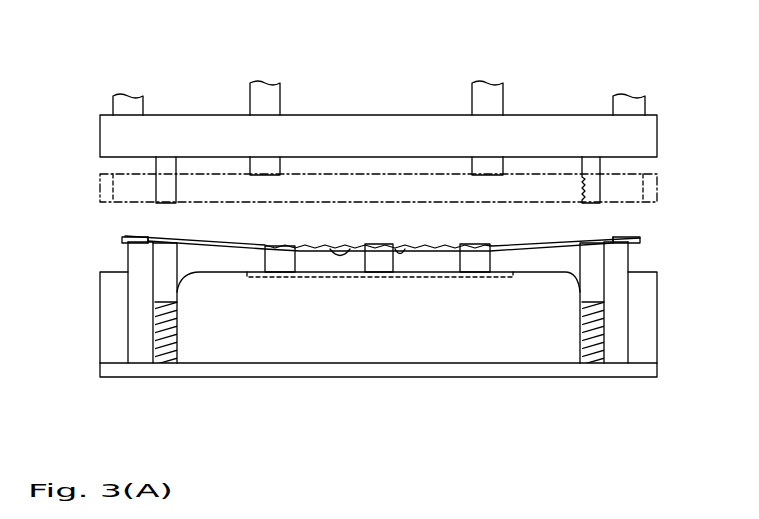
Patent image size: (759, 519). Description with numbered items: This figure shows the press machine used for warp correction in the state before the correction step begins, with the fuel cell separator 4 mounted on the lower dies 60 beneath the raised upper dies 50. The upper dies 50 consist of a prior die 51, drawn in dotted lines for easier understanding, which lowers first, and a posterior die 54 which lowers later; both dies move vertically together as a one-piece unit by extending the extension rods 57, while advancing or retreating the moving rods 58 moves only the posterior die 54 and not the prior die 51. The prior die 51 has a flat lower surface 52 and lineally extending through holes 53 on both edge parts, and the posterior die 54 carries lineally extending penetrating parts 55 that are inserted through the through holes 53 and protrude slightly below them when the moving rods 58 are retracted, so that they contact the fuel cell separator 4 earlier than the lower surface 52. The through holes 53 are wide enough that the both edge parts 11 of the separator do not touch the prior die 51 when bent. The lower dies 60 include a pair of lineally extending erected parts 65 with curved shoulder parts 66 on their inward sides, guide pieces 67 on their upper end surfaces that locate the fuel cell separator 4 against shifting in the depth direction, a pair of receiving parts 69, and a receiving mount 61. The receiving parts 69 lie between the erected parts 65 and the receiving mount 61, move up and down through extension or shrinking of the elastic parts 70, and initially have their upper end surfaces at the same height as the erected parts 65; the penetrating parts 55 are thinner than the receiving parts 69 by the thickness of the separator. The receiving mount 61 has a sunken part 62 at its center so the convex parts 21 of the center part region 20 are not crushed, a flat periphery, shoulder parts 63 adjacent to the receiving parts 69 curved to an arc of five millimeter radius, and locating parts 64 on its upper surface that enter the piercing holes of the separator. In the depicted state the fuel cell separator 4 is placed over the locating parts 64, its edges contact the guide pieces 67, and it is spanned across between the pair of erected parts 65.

The fuel cell separator 4 is at (640, 240).
The both edge parts 11 is at (148, 237).
The center part region 20 is at (400, 253).
The convex parts 21 is at (340, 255).
The upper dies 50 is at (120, 80).
The prior die 51 is at (110, 190).
The lower surface 52 is at (263, 203).
The through holes 53 is at (142, 187).
The posterior die 54 is at (110, 137).
The penetrating parts 55 is at (168, 187).
The extension rods 57 is at (265, 107).
The moving rods 58 is at (130, 105).
The lower dies 60 is at (150, 384).
The receiving mount 61 is at (370, 343).
The sunken part 62 is at (422, 278).
The shoulder parts 63 is at (177, 300).
The locating parts 64 is at (275, 241).
The erected parts 65 is at (137, 307).
The shoulder parts 66 is at (143, 250).
The guide pieces 67 is at (125, 236).
The receiving parts 69 is at (176, 300).
The elastic parts 70 is at (165, 352).